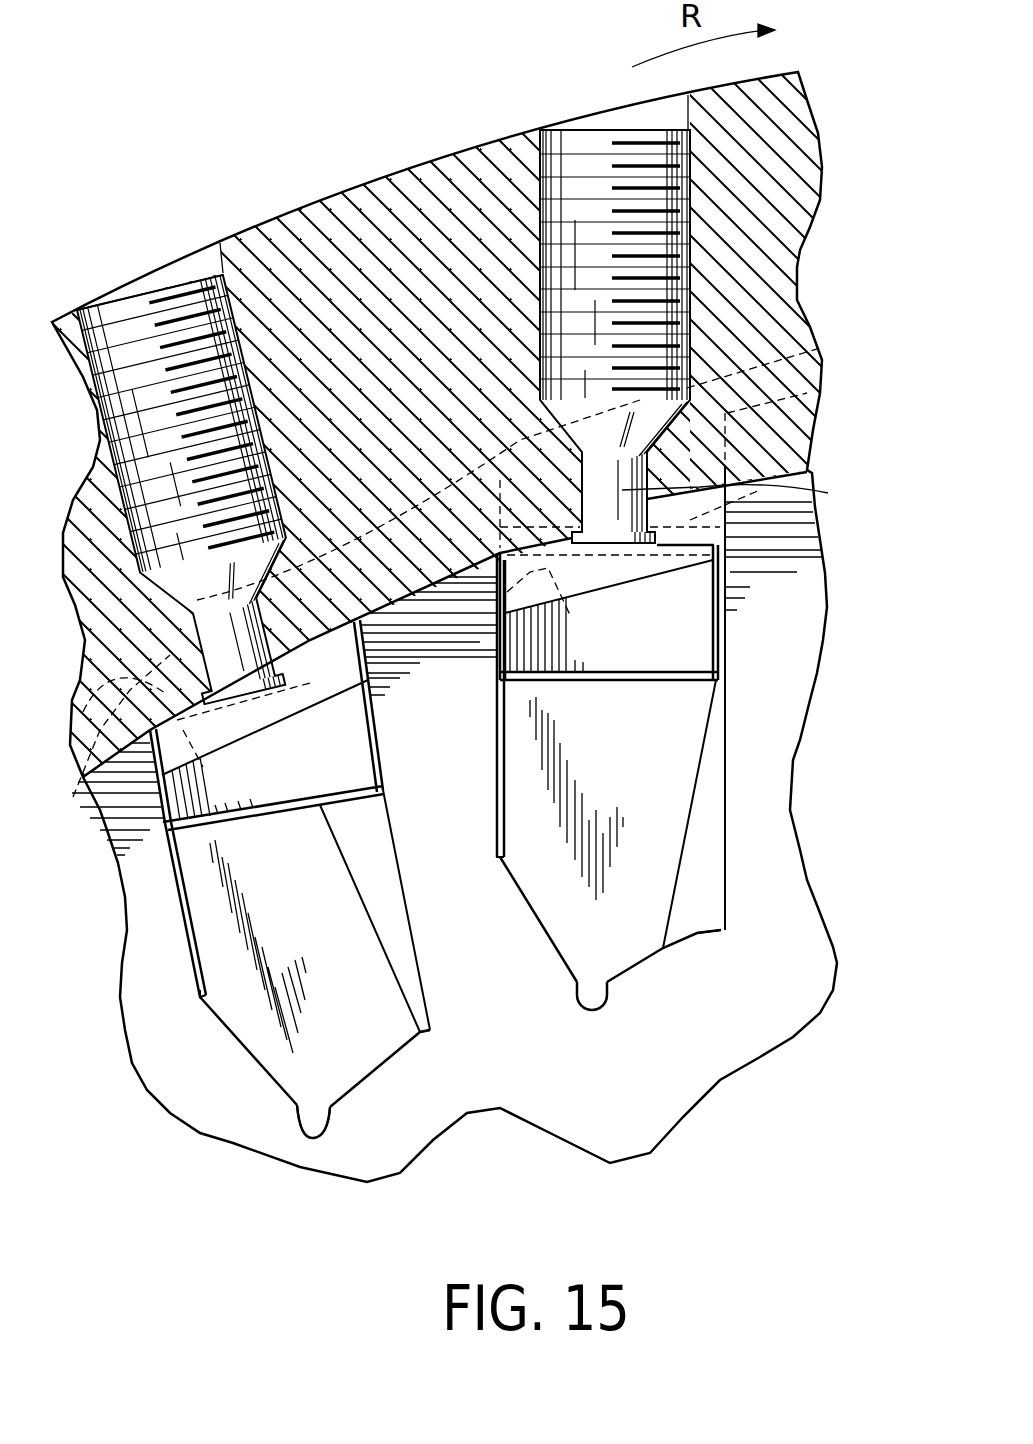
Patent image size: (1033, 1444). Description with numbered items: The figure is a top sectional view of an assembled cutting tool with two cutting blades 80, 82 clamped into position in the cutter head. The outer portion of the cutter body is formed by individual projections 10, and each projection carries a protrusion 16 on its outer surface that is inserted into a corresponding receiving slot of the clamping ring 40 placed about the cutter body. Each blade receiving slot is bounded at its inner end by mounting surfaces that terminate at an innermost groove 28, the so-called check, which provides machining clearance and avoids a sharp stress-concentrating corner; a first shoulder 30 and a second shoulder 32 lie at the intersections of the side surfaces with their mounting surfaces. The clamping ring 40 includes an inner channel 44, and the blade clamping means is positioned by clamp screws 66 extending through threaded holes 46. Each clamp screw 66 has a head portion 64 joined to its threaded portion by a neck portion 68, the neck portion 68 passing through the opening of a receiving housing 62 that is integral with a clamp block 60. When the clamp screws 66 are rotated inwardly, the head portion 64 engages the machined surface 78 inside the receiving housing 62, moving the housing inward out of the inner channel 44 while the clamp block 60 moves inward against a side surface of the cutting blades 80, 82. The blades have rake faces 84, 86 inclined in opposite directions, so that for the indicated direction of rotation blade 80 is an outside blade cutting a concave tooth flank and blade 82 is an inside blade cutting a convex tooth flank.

The projection 10 is at (759, 602).
The protrusion 16 is at (773, 440).
The innermost groove 28 is at (590, 1003).
The first shoulder 30 is at (721, 932).
The second shoulder 32 is at (497, 857).
The clamping ring 40 is at (288, 253).
The inner channel 44 is at (96, 664).
The threaded hole 46 is at (183, 270).
The clamp block 60 is at (662, 652).
The receiving housing 62 is at (505, 603).
The head portion 64 is at (728, 527).
The clamping screw 66 is at (592, 143).
The neck portion 68 is at (745, 492).
The surface 78 is at (378, 708).
The cutting blade 80 is at (593, 783).
The cutting blade 82 is at (270, 943).
The rake face 84 is at (683, 853).
The rake face 86 is at (347, 857).